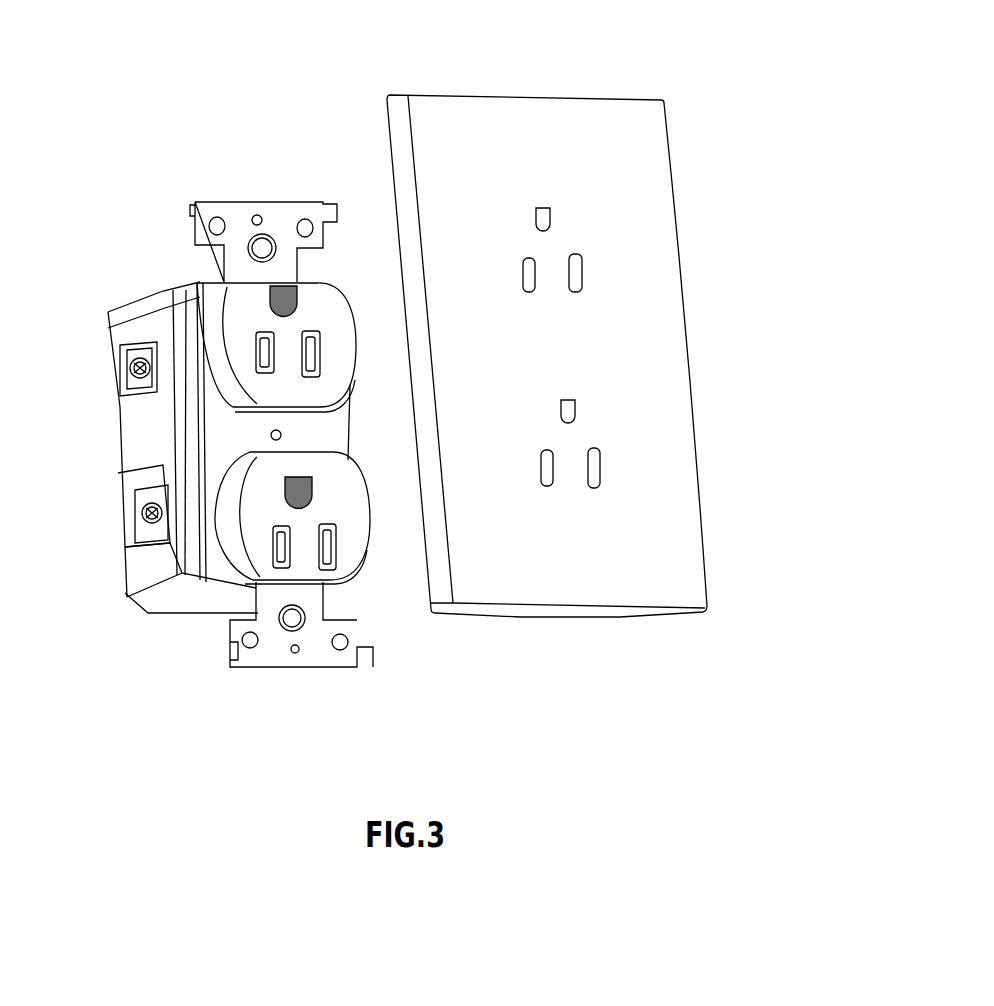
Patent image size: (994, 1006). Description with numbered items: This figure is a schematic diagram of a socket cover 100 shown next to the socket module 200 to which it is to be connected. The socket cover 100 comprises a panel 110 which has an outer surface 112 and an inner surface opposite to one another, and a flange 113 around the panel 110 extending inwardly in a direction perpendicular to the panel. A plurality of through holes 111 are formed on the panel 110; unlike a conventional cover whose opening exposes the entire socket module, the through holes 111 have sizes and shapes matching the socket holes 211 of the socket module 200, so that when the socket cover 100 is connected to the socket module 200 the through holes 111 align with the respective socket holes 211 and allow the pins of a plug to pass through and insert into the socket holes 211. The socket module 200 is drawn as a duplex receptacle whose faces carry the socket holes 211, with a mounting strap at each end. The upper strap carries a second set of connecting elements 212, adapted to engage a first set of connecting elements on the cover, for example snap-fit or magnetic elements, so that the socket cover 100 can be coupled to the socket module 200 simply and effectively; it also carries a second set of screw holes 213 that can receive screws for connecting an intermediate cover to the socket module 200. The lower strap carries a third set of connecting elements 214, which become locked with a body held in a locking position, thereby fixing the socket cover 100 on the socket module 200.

The socket cover 100 is at (708, 66).
The panel 110 is at (668, 183).
The through holes 111 is at (578, 293).
The outer surface 112 is at (652, 300).
The flange 113 is at (523, 612).
The socket module 200 is at (110, 575).
The socket holes 211 is at (267, 353).
The second set of connecting elements 212 is at (197, 206).
The second set of screw holes 213 is at (251, 256).
The third set of connecting elements 214 is at (234, 655).